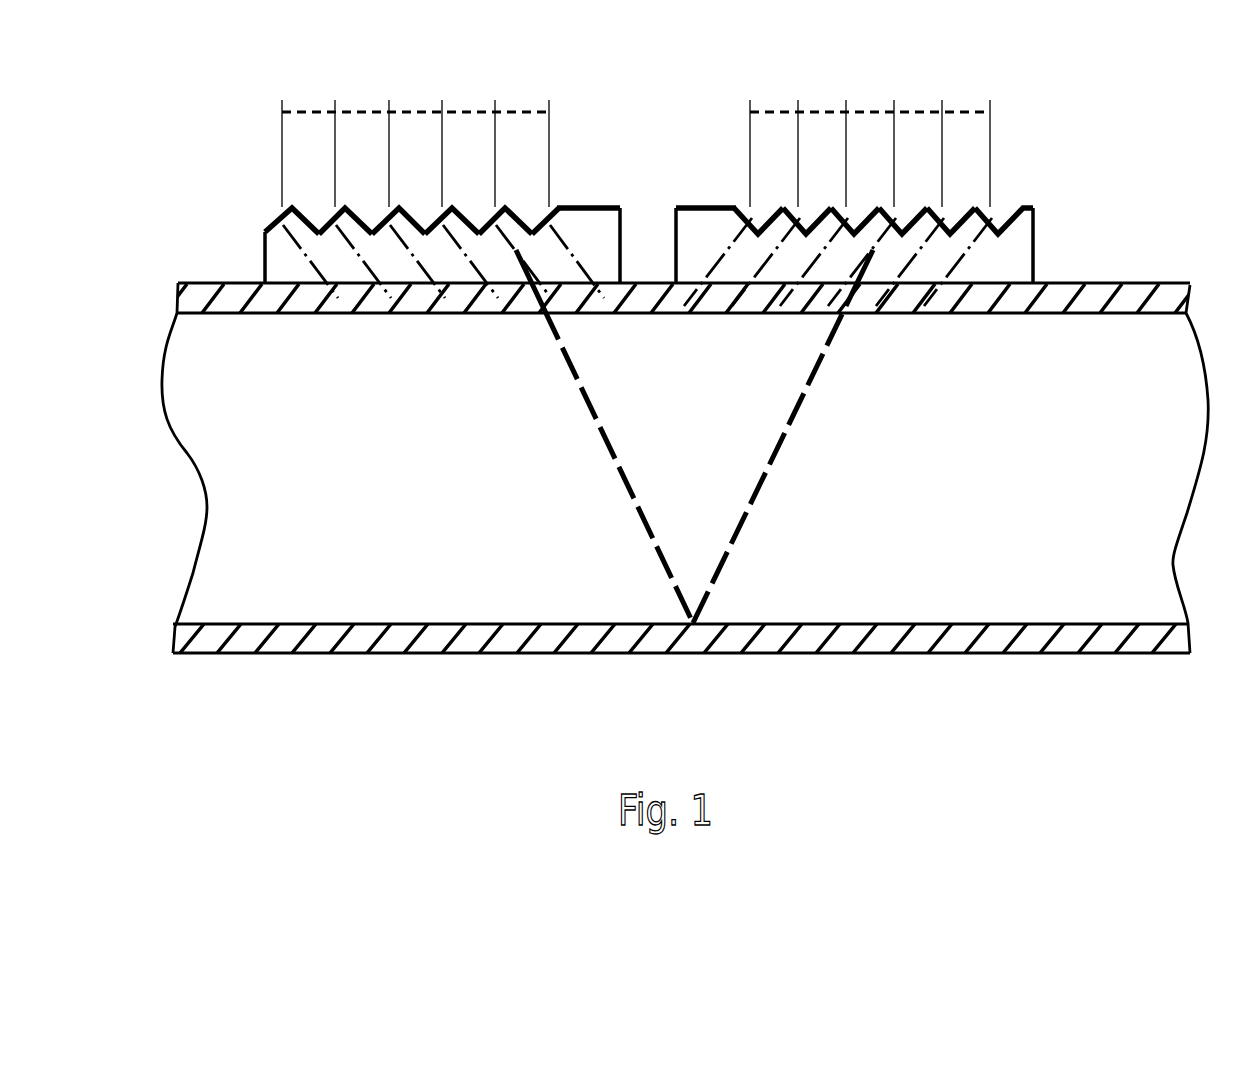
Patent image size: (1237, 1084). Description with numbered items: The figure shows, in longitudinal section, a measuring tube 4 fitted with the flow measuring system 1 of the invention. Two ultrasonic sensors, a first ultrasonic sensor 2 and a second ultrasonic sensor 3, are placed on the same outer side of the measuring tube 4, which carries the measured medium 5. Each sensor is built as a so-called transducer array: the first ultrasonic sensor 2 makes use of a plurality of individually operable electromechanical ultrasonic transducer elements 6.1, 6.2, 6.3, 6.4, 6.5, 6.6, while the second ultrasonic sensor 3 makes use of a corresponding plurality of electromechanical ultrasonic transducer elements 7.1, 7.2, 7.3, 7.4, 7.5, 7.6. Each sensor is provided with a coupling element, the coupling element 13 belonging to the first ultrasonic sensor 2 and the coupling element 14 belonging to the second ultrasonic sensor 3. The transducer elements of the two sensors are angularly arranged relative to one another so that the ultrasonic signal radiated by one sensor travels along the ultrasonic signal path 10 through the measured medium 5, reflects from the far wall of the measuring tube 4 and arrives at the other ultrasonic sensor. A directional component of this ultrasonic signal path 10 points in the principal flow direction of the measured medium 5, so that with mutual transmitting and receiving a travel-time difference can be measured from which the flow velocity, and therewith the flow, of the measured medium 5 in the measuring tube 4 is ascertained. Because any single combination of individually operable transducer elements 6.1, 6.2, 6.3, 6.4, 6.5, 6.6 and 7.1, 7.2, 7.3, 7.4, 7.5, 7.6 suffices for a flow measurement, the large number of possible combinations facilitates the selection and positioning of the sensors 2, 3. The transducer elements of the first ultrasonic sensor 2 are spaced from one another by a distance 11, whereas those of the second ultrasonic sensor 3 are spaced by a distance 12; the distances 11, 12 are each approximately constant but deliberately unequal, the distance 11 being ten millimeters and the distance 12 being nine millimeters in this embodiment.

The flow measuring system 1 is at (152, 96).
The first ultrasonic sensor 2 is at (1067, 201).
The second ultrasonic sensor 3 is at (252, 221).
The measuring tube 4 is at (1132, 297).
The measured medium 5 is at (1131, 376).
The electromechanical ultrasonic transducer element 6.1 is at (1000, 218).
The electromechanical ultrasonic transducer element 6.2 is at (953, 218).
The electromechanical ultrasonic transducer element 6.3 is at (905, 218).
The electromechanical ultrasonic transducer element 6.4 is at (858, 218).
The electromechanical ultrasonic transducer element 6.5 is at (810, 218).
The electromechanical ultrasonic transducer element 6.6 is at (763, 218).
The electromechanical ultrasonic transducer element 7.1 is at (280, 217).
The electromechanical ultrasonic transducer element 7.2 is at (323, 217).
The electromechanical ultrasonic transducer element 7.3 is at (380, 218).
The electromechanical ultrasonic transducer element 7.4 is at (435, 218).
The electromechanical ultrasonic transducer element 7.5 is at (487, 218).
The electromechanical ultrasonic transducer element 7.6 is at (537, 220).
The ultrasonic signal path 10 is at (780, 443).
The distance of the electromechanical ultrasonic transducer elements from one anothe 11 is at (870, 143).
The distance of the electromechanical ultrasonic transducer elements from one anothe 12 is at (415, 143).
The coupling element 13 is at (687, 225).
The coupling element 14 is at (587, 218).